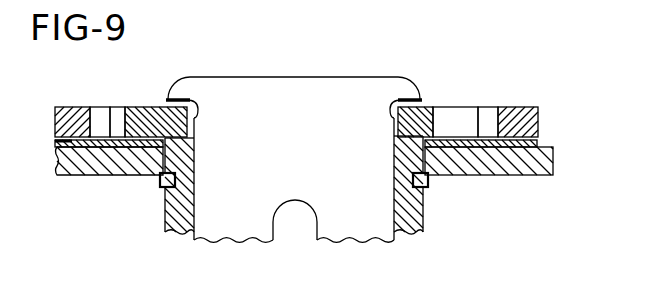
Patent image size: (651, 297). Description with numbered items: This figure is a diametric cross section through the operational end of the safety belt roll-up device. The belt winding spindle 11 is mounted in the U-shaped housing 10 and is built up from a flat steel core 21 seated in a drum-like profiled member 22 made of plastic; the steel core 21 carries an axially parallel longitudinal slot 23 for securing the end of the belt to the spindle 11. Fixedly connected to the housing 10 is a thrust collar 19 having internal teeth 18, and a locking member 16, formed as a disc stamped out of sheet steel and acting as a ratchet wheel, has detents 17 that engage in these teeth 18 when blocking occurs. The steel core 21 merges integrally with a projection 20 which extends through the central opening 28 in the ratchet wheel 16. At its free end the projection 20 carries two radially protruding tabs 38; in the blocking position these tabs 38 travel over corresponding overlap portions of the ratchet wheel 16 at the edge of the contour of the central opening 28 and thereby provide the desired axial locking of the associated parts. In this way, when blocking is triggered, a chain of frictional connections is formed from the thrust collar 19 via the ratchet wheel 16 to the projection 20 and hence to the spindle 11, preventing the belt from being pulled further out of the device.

The housing 10 is at (545, 158).
The belt winding spindle 11 is at (423, 218).
The locking member 16 is at (143, 122).
The detents 17 is at (130, 111).
The teeth 18 is at (489, 112).
The thrust collar 19 is at (67, 111).
The projection 20 is at (283, 85).
The steel core 21 is at (345, 232).
The profiled member 22 is at (414, 232).
The longitudinal slot 23 is at (275, 228).
The central opening 28 is at (193, 121).
The tabs 38 is at (175, 97).